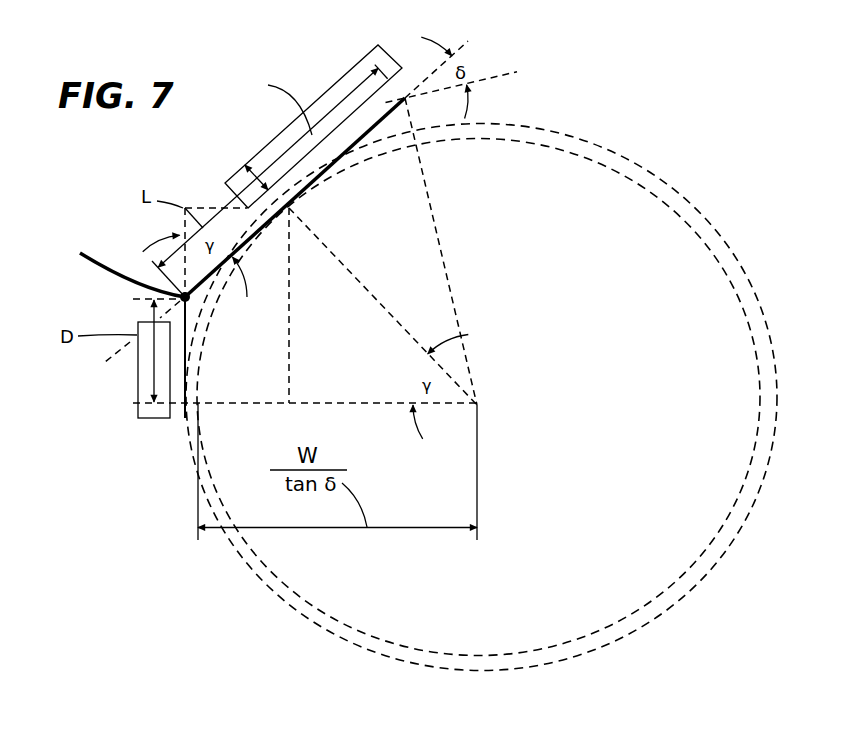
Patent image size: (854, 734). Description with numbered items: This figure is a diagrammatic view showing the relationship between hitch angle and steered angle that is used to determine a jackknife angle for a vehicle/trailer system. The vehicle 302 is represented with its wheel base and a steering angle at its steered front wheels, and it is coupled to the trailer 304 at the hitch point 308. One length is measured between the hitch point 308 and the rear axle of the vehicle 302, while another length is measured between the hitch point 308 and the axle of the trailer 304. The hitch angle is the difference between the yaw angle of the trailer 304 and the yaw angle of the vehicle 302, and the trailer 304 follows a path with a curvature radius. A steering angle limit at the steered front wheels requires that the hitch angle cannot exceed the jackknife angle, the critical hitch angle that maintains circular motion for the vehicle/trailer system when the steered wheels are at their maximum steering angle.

The vehicle 302 is at (340, 79).
The trailer 304 is at (137, 368).
The hitch point 308 is at (110, 267).